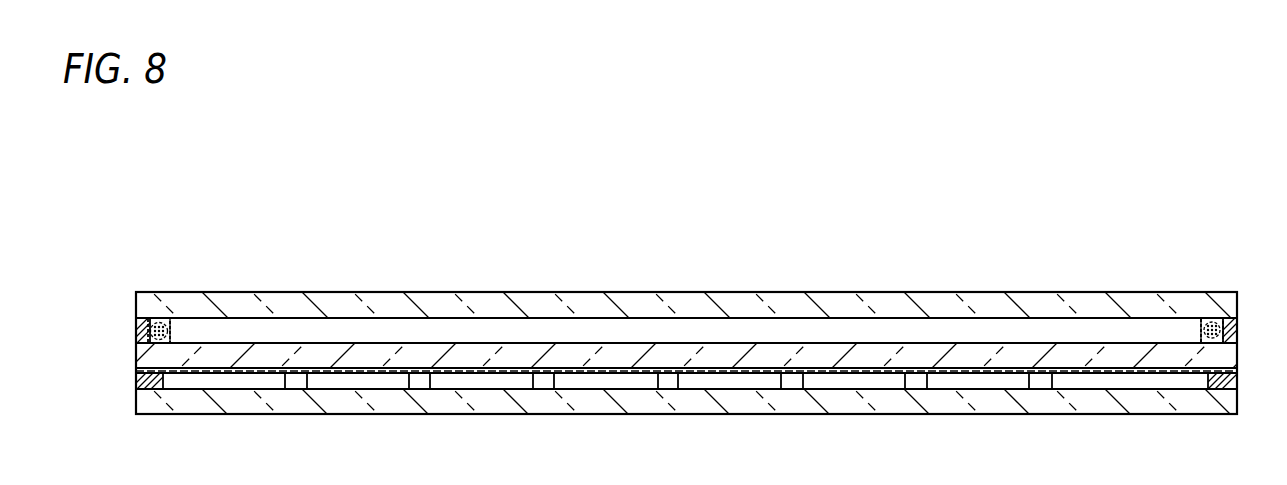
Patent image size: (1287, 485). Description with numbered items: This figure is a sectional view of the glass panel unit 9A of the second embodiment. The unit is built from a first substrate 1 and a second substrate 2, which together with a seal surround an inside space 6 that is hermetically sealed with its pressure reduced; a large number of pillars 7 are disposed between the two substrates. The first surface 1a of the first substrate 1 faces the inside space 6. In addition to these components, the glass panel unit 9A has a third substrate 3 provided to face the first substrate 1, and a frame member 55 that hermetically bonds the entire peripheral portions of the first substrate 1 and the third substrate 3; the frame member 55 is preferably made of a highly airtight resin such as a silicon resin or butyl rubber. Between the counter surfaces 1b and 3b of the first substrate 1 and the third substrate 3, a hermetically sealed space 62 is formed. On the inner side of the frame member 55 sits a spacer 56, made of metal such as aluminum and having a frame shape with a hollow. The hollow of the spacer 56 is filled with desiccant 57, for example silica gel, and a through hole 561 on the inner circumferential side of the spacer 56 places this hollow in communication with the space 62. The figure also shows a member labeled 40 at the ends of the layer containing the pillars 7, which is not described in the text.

The first substrate 1 is at (378, 352).
The first surface 1a is at (365, 373).
The counter surface 1b is at (468, 343).
The second substrate 2 is at (442, 405).
The third substrate 3 is at (576, 301).
The counter surface 3b is at (655, 318).
The inside space 6 is at (484, 382).
The pillars 7 is at (918, 383).
The glass panel unit 9A is at (1134, 284).
The frame member 40 is at (1230, 383).
The frame member 55 is at (1232, 338).
The spacer 56 is at (1222, 330).
The through hole 561 is at (1200, 331).
The desiccant 57 is at (1214, 320).
The space 62 is at (952, 328).